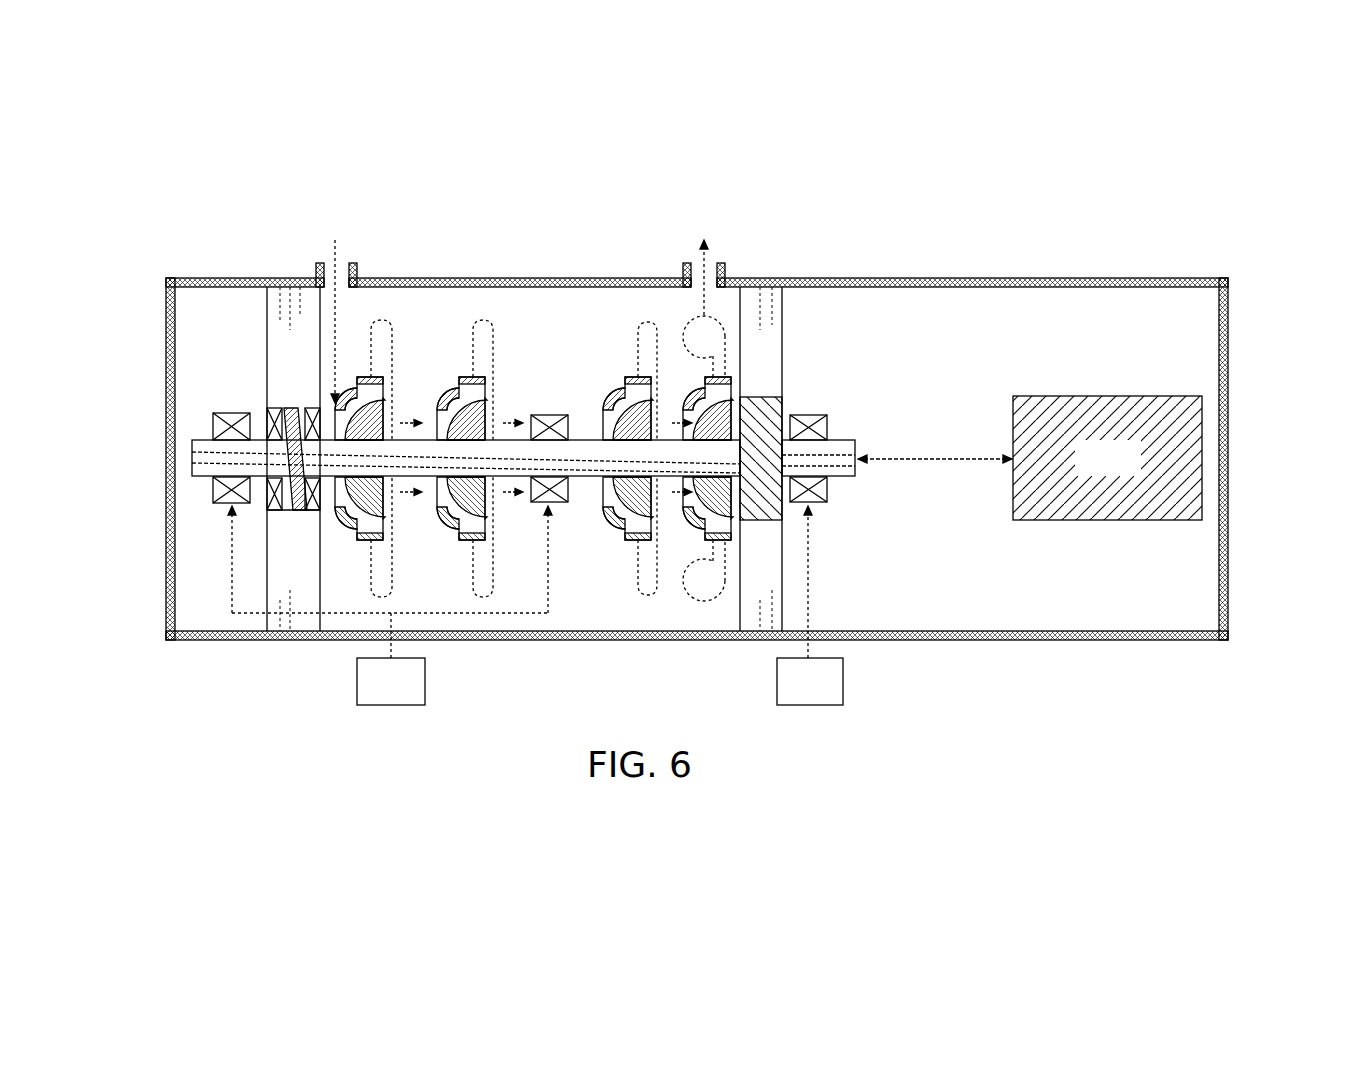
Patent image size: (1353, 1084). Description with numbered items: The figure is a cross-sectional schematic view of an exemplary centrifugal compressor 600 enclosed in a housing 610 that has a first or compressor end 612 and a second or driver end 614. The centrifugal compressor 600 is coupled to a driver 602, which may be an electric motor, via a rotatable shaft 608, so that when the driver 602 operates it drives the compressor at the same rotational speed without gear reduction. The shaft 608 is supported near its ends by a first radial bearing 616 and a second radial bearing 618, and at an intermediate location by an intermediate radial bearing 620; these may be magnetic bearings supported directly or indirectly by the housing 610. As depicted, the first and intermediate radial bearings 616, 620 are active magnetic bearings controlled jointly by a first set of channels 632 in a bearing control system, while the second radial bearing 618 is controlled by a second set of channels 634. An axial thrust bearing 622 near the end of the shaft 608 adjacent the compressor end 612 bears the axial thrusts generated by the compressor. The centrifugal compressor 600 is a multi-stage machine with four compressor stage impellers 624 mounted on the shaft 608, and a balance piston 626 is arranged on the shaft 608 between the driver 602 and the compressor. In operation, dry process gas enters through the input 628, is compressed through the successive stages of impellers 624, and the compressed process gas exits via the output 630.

The centrifugal compressor 600 is at (543, 318).
The driver 602 is at (1134, 474).
The rotatable shaft 608 is at (850, 480).
The housing 610 is at (908, 278).
The compressor end 612 is at (166, 456).
The driver end 614 is at (1228, 456).
The first radial bearing 616 is at (225, 506).
The second radial bearing 618 is at (830, 427).
The intermediate radial bearing 620 is at (549, 415).
The axial thrust bearing 622 is at (277, 407).
The compressor stage impellers 624 is at (438, 510).
The balance piston 626 is at (766, 397).
The input 628 is at (343, 268).
The output 630 is at (712, 268).
The first set of channels 632 is at (418, 698).
The second set of channels 634 is at (837, 698).